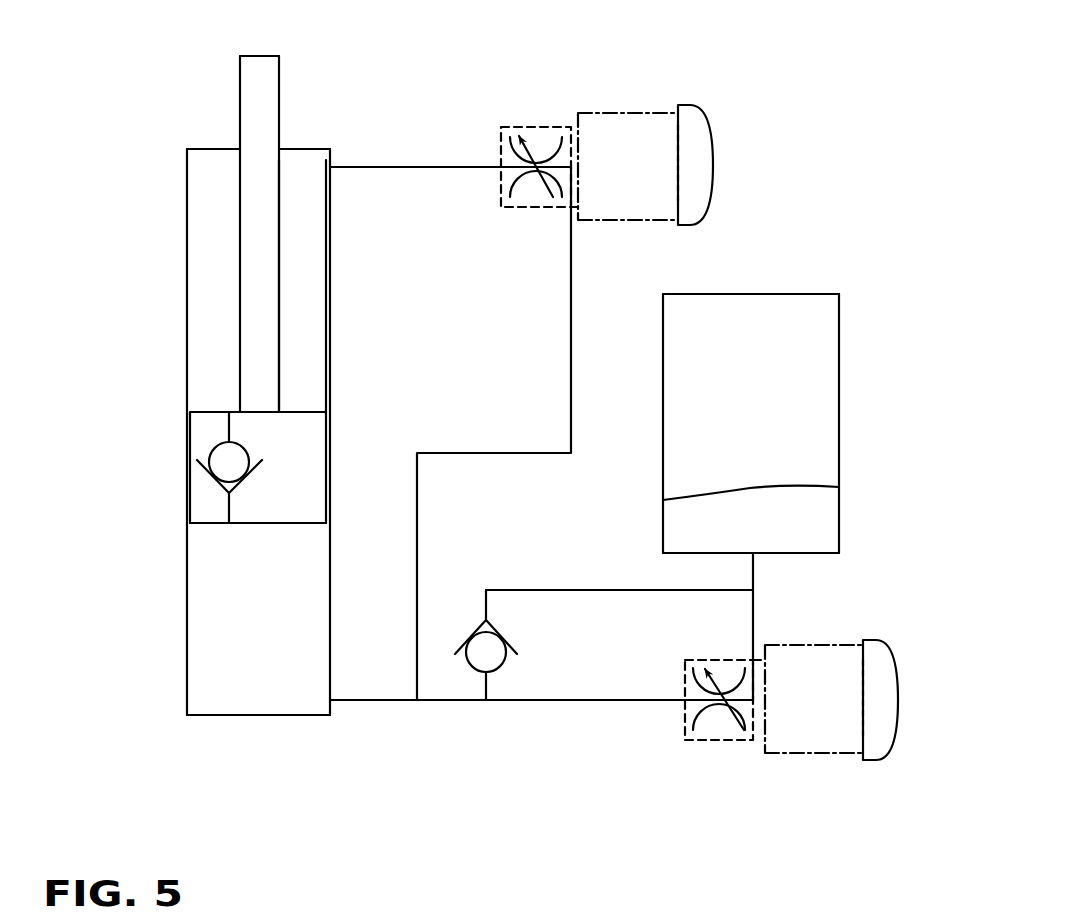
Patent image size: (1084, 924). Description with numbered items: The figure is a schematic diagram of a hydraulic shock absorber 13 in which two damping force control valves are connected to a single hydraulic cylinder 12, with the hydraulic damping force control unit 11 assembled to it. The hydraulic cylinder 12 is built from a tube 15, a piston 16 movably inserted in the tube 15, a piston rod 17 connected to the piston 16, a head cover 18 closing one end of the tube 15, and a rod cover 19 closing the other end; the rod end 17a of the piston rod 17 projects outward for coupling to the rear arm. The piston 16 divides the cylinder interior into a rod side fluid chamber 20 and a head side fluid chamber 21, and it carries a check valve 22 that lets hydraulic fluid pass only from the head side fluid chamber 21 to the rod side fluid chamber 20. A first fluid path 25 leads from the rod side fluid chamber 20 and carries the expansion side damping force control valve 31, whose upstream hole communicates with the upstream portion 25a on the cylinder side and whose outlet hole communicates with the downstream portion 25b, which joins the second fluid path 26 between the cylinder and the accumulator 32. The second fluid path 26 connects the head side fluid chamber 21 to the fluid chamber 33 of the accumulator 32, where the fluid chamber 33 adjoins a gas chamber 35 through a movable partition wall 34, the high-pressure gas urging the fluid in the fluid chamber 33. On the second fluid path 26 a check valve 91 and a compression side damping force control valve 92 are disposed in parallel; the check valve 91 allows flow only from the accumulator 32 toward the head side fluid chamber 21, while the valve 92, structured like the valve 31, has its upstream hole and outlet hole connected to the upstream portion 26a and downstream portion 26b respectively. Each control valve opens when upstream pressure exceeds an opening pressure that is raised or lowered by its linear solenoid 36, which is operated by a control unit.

The hydraulic damping force control unit 11 is at (840, 140).
The hydraulic cylinder 12 is at (183, 238).
The hydraulic shock absorber 13 is at (123, 51).
The tube 15 is at (186, 352).
The piston 16 is at (208, 525).
The piston rod 17 is at (280, 103).
The rod end 17a is at (251, 56).
The head cover 18 is at (217, 716).
The rod cover 19 is at (197, 149).
The rod side fluid chamber 20 is at (286, 279).
The head side fluid chamber 21 is at (243, 643).
The check valve 22 is at (202, 466).
The first fluid path 25 is at (388, 162).
The upstream portion 25a is at (413, 170).
The downstream portion 25b is at (571, 352).
The second fluid path 26 is at (368, 696).
The upstream portion 26a is at (455, 705).
The downstream portion 26b is at (756, 575).
The expansion side damping force control valve 31 is at (545, 146).
The accumulator 32 is at (812, 294).
The fluid chamber 33 is at (733, 533).
The movable partition wall 34 is at (797, 487).
The gas chamber 35 is at (733, 421).
The linear solenoid 36 is at (654, 107).
The check valve 91 is at (506, 645).
The compression side damping force control valve 92 is at (699, 724).